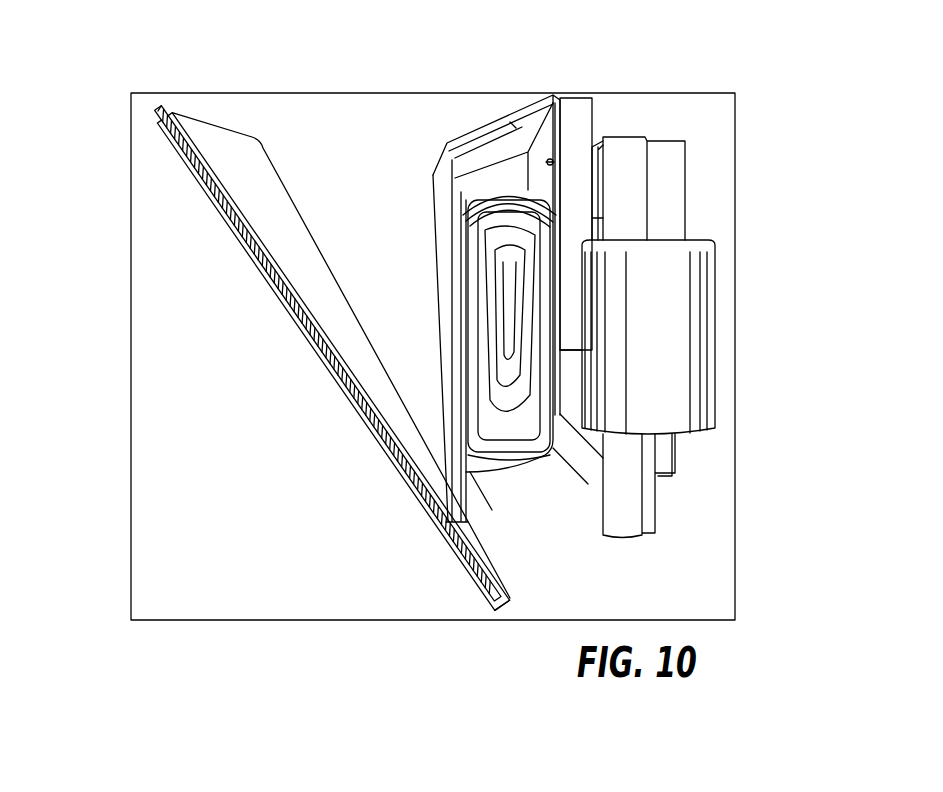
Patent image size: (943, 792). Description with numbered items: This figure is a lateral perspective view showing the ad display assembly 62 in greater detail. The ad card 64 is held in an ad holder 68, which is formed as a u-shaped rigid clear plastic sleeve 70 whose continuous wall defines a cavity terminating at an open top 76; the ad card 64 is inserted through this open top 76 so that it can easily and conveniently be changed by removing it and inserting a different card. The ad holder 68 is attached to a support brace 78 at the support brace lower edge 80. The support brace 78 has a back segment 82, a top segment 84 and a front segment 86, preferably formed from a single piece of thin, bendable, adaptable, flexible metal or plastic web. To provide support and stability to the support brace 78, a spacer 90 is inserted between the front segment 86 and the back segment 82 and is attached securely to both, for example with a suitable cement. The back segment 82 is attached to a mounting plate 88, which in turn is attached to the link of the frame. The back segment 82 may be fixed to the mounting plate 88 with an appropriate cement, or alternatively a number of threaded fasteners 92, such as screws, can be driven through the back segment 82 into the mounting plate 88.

The display assembly 62 is at (268, 88).
The ad card 64 is at (205, 184).
The ad holder 68 is at (292, 366).
The sleeve 70 is at (405, 483).
The open top 76 is at (150, 113).
The support brace 78 is at (440, 294).
The support brace lower edge 80 is at (510, 601).
The back segment 82 is at (562, 136).
The top segment 84 is at (485, 135).
The front segment 86 is at (446, 372).
The mounting plate 88 is at (570, 197).
The spacer 90 is at (522, 452).
The threaded fasteners 92 is at (557, 160).